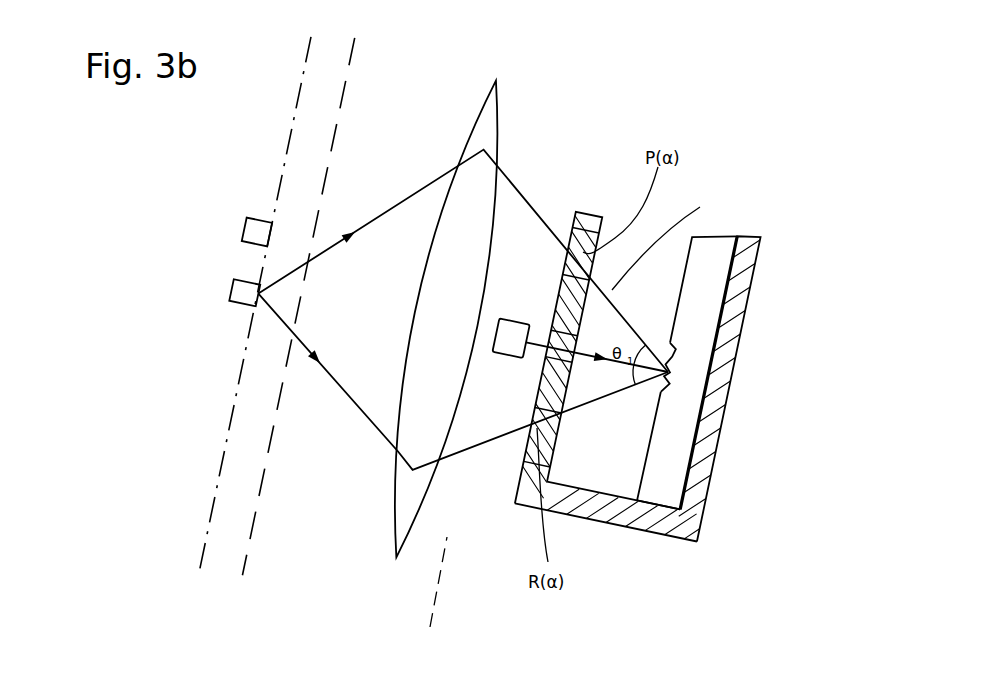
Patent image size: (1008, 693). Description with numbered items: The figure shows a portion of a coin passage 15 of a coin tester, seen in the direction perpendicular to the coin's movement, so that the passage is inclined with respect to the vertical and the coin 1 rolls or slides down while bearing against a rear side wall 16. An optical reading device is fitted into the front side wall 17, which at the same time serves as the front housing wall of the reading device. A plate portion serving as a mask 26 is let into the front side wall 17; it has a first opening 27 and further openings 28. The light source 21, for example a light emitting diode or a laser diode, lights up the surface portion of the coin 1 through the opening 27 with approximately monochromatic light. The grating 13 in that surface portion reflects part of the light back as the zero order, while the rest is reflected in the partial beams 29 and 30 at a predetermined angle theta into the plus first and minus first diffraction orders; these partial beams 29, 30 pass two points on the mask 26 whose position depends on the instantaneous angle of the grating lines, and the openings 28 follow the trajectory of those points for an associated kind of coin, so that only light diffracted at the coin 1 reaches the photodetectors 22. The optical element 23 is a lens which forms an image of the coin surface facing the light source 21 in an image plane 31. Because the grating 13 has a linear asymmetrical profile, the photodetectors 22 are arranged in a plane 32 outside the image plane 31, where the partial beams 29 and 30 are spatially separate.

The coin 1 is at (715, 247).
The grating 13 is at (690, 408).
The coin passage 15 is at (593, 520).
The rear side wall 16 is at (742, 376).
The front side wall 17 is at (583, 213).
The light source 21 is at (430, 597).
The photodetectors 22 is at (246, 227).
The optical element 23 is at (397, 560).
The mask 26 is at (603, 270).
The first opening 27 is at (503, 352).
The further openings 28 is at (547, 358).
The partial beam 29 is at (716, 192).
The partial beam 30 is at (628, 515).
The image plane 31 is at (200, 560).
The plane 32 is at (245, 563).